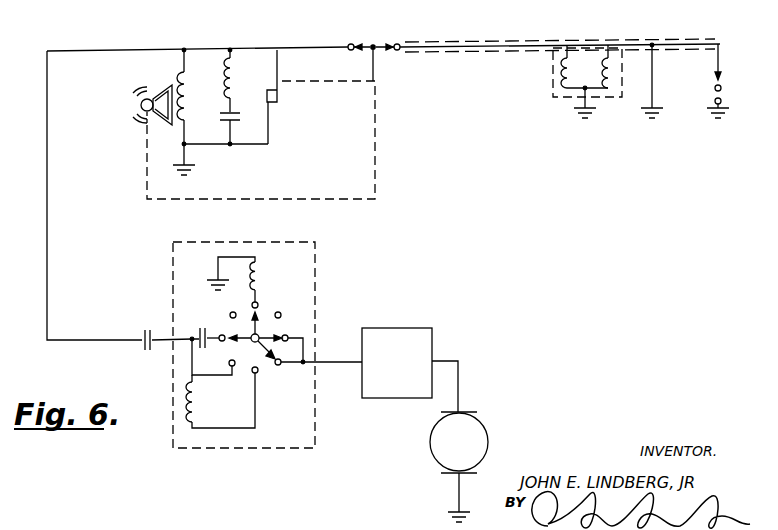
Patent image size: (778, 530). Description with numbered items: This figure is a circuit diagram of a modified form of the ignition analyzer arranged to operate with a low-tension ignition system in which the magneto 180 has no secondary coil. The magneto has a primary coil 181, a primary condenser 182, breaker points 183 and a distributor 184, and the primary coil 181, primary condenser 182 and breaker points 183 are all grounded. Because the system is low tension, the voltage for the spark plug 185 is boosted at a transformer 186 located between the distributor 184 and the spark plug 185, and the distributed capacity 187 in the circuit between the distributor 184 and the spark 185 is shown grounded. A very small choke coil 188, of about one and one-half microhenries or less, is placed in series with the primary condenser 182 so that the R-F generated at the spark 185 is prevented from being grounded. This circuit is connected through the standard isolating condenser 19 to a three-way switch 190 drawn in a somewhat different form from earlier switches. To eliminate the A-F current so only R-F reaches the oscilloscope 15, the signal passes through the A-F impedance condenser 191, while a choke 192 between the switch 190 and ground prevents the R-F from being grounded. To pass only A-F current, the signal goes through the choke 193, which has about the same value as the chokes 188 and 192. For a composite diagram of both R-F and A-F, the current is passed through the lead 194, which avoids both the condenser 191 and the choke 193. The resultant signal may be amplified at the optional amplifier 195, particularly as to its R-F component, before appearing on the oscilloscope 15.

The oscilloscope 15 is at (487, 437).
The isolating condenser 19 is at (145, 330).
The magneto 180 is at (140, 119).
The primary coil 181 is at (189, 98).
The primary condenser 182 is at (243, 128).
The breaker points 183 is at (278, 100).
The distributor 184 is at (375, 44).
The spark plug 185 is at (727, 99).
The transformer 186 is at (562, 77).
The distributed capacity 187 is at (630, 40).
The choke coil 188 is at (236, 84).
The three-way switch 190 is at (318, 253).
The A-F impedance condenser 191 is at (212, 327).
The choke 192 is at (262, 278).
The choke 193 is at (198, 406).
The lead 194 is at (219, 378).
The optional amplifier 195 is at (432, 332).